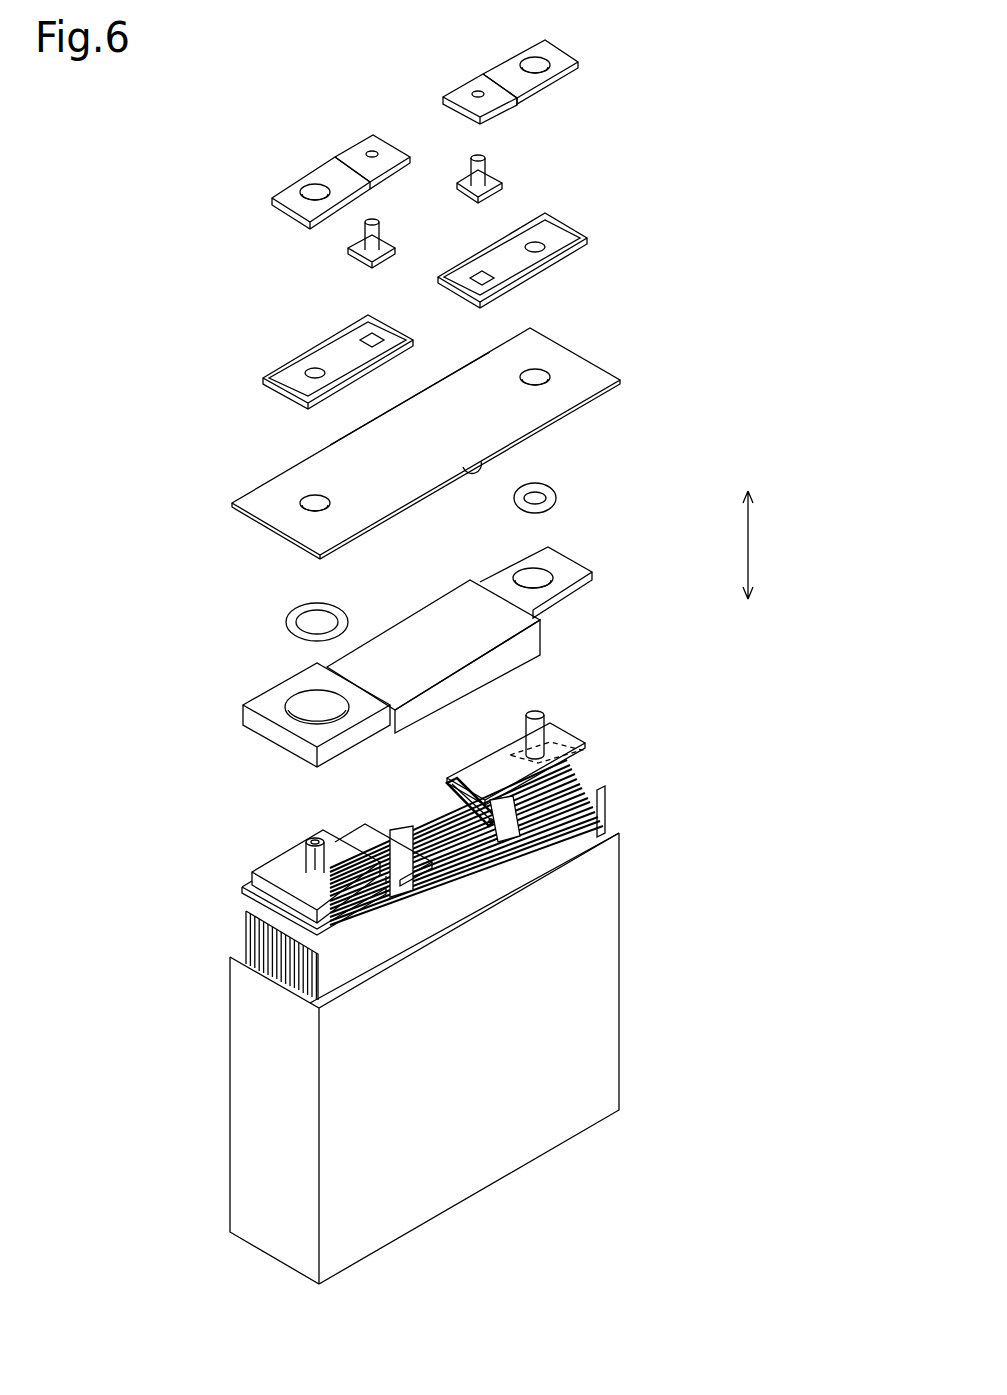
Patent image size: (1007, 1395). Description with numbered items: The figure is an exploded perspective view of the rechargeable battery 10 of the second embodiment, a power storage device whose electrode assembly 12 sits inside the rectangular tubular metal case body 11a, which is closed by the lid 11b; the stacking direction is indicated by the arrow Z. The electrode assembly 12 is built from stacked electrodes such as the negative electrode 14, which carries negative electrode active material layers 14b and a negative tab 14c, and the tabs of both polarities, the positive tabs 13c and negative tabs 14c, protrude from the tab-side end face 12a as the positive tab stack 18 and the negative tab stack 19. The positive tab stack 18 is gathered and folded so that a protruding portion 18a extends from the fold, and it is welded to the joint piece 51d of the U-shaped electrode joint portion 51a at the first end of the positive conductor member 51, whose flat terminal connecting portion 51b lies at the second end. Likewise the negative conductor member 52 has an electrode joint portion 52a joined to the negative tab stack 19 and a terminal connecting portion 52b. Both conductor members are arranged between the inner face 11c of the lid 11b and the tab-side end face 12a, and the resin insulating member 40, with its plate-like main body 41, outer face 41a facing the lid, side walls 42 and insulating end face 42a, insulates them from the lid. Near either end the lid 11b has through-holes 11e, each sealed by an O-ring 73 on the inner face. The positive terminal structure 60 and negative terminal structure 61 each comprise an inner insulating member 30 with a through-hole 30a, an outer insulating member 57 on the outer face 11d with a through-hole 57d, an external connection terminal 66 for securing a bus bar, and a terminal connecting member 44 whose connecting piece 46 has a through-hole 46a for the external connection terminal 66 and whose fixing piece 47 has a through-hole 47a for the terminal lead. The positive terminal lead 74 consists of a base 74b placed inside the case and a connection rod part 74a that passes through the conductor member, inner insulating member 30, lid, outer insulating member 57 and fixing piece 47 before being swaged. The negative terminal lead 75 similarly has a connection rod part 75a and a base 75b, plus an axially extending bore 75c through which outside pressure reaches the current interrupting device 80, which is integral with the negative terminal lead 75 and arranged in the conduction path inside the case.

The rechargeable battery 10 is at (691, 110).
The positive terminal structure 60 is at (586, 174).
The negative terminal structure 61 is at (320, 275).
The electrode assembly 12 is at (625, 798).
The stacking direction Z is at (752, 543).
The fixing piece 47 is at (547, 40).
The connecting piece 46 is at (452, 88).
The terminal connecting member 44 is at (463, 82).
The through-hole 46a is at (478, 92).
The through-hole 47a is at (537, 67).
The external connection terminal 66 is at (478, 157).
The outer insulating member 57 is at (517, 230).
The through-hole 57d is at (538, 252).
The lid 11b is at (593, 360).
The outer face 11d is at (443, 395).
The through-hole 11e is at (547, 378).
The inner face 11c is at (475, 468).
The O-ring 73 is at (553, 488).
The insulating member 40 is at (461, 633).
The main body 41 is at (378, 640).
The outer face 41a is at (460, 593).
The side walls 42 is at (533, 640).
The insulating end face 42a is at (517, 670).
The inner insulating member 30 is at (565, 558).
The through-hole 30a is at (542, 585).
The positive conductor member 51 is at (580, 733).
The electrode joint portion 51a is at (420, 760).
The terminal connecting portion 51b is at (573, 733).
The joint piece 51d is at (447, 797).
The positive terminal lead 74 is at (528, 715).
The connection rod part 74a is at (528, 737).
The base 74b is at (582, 758).
The positive tab stack 18 is at (515, 829).
The protruding portion 18a is at (440, 787).
The positive tabs 13c is at (523, 827).
The negative tab stack 19 is at (399, 922).
The negative electrode 14 is at (425, 902).
The negative electrode active material layers 14b is at (333, 979).
The negative tab 14c is at (370, 955).
The tab-side end face 12a is at (462, 893).
The negative conductor member 52 is at (355, 833).
The electrode joint portion 52a is at (345, 838).
The terminal connecting portion 52b is at (245, 895).
The negative terminal lead 75 is at (307, 842).
The connection rod part 75a is at (300, 858).
The base 75b is at (285, 870).
The bore 75c is at (319, 875).
The current interrupting device 80 is at (268, 908).
The case body 11a is at (240, 1020).